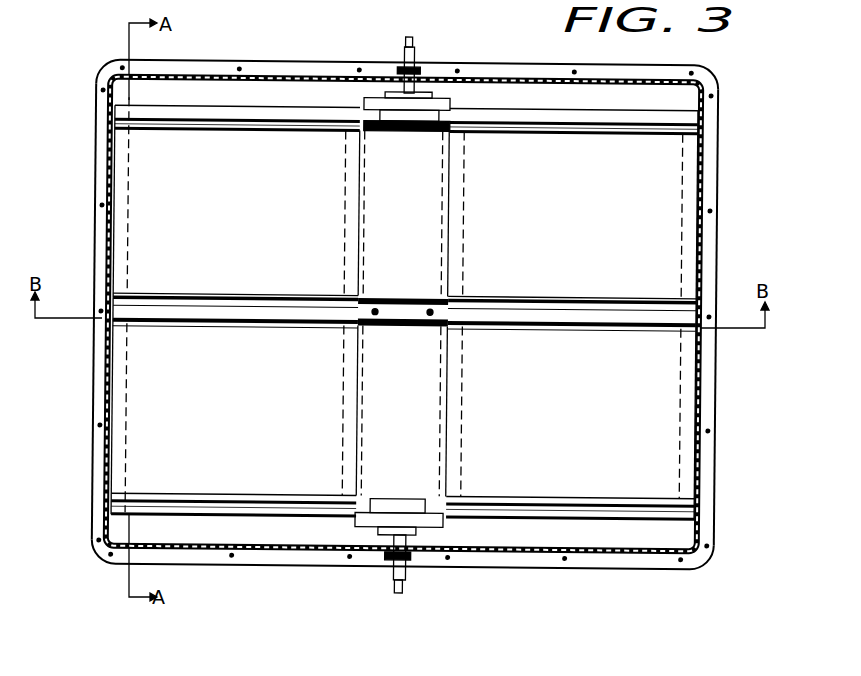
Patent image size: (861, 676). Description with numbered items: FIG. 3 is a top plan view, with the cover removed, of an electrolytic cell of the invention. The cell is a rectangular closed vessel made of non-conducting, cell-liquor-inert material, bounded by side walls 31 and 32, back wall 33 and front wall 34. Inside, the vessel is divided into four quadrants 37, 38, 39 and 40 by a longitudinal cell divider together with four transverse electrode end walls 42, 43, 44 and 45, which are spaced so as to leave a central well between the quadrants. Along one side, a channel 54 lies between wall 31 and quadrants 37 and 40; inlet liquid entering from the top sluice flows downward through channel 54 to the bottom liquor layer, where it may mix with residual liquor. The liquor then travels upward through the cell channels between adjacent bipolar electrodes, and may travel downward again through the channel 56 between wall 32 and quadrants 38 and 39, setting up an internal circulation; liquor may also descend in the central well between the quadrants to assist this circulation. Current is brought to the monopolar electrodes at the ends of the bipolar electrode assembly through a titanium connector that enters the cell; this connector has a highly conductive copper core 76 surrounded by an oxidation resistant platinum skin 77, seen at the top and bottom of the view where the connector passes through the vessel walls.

The side wall 31 is at (712, 308).
The side wall 32 is at (93, 303).
The back wall 33 is at (473, 62).
The front wall 34 is at (520, 556).
The quadrant 37 is at (581, 234).
The quadrant 38 is at (240, 225).
The quadrant 39 is at (243, 430).
The quadrant 40 is at (585, 434).
The transverse electrode end wall 42 is at (352, 202).
The transverse electrode end wall 43 is at (348, 394).
The transverse electrode end wall 44 is at (455, 393).
The transverse electrode end wall 45 is at (457, 198).
The channel 54 is at (686, 260).
The channel 56 is at (120, 275).
The highly conductive core 76 is at (398, 589).
The oxidation resistant platinum skin 77 is at (406, 575).